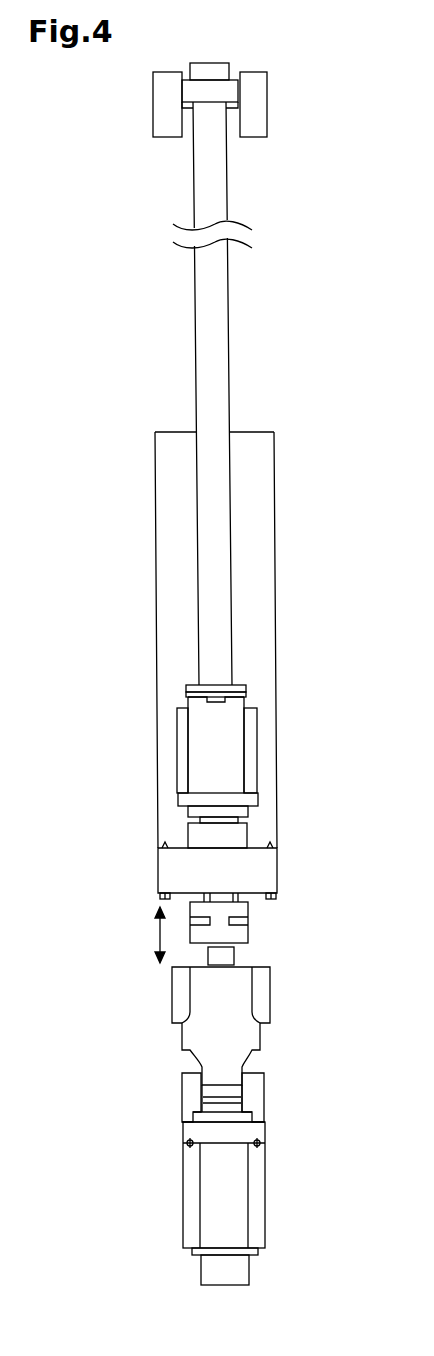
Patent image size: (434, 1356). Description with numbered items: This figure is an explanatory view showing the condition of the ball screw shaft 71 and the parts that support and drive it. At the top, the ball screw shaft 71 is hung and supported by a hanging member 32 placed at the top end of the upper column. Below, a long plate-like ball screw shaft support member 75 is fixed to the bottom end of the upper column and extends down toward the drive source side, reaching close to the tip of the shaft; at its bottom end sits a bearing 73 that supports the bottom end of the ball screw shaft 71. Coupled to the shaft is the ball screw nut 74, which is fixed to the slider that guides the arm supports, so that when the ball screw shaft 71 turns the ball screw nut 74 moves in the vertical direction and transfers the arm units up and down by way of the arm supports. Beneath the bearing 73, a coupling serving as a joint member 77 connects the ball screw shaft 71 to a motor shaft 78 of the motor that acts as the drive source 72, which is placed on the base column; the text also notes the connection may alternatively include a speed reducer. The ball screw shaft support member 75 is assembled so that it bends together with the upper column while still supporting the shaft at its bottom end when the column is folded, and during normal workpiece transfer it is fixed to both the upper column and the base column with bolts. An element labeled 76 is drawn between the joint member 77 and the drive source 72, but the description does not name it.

The hanging member 32 is at (232, 90).
The ball screw shaft 71 is at (213, 297).
The drive source 72 is at (235, 1227).
The bearing 73 is at (268, 880).
The ball screw nut 74 is at (227, 748).
The ball screw shaft support member 75 is at (172, 582).
The coupling 76 is at (240, 1037).
The joint member 77 is at (238, 937).
The motor shaft 78 is at (223, 958).